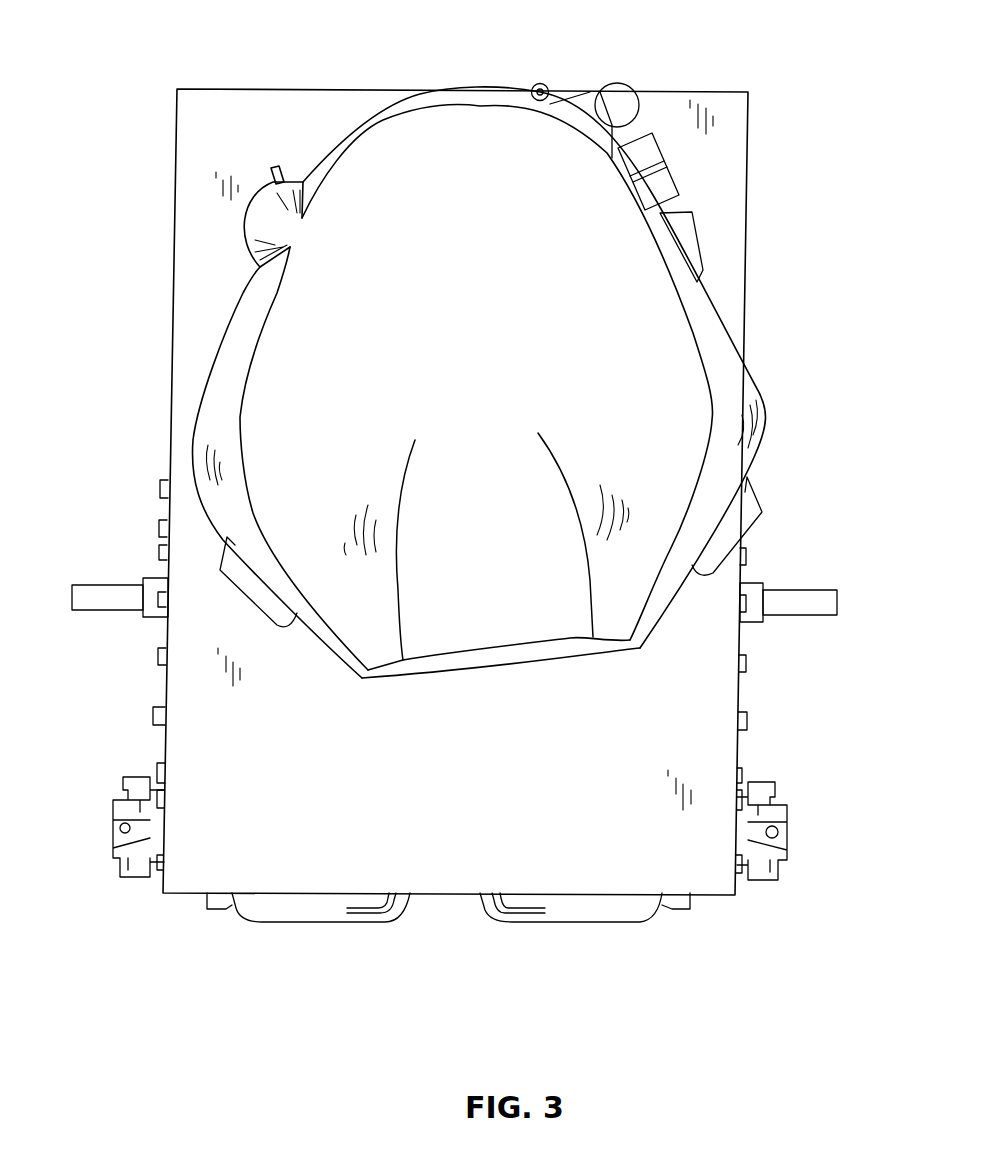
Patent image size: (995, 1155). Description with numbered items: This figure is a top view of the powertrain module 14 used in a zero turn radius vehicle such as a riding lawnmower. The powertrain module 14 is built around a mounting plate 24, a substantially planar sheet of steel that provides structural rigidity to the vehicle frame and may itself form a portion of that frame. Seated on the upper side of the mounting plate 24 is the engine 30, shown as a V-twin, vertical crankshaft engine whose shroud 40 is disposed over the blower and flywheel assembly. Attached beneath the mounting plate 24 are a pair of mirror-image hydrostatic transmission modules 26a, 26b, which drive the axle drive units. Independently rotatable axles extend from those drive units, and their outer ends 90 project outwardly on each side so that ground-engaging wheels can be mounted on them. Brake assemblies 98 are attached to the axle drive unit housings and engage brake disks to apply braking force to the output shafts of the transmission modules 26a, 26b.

The powertrain module 14 is at (108, 83).
The mounting plate 24 is at (728, 137).
The engine 30 is at (784, 340).
The shroud 40 is at (442, 162).
The outer ends of axles 90 is at (95, 597).
The brake assemblies 98 is at (113, 812).
The hydrostatic transmission module 26a is at (590, 942).
The hydrostatic transmission module 26b is at (315, 942).